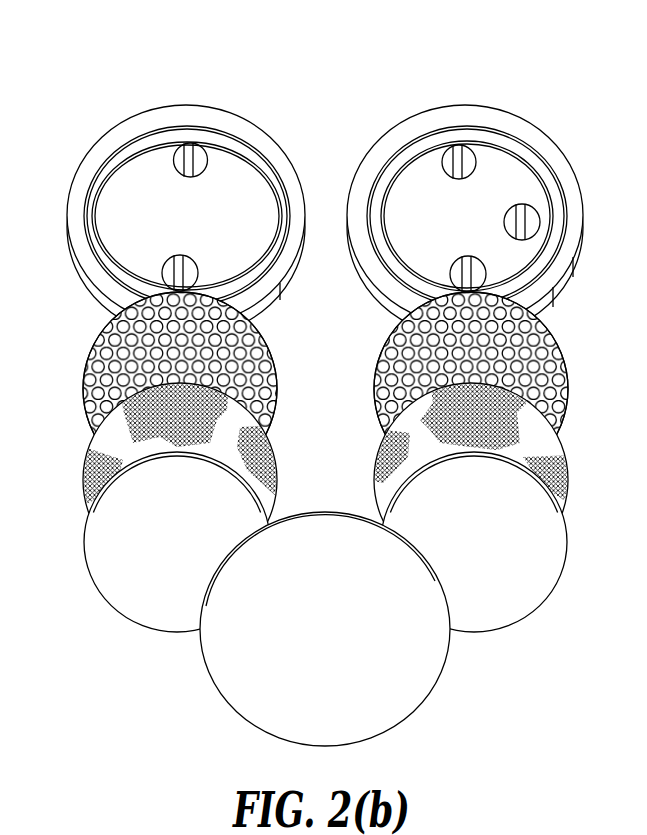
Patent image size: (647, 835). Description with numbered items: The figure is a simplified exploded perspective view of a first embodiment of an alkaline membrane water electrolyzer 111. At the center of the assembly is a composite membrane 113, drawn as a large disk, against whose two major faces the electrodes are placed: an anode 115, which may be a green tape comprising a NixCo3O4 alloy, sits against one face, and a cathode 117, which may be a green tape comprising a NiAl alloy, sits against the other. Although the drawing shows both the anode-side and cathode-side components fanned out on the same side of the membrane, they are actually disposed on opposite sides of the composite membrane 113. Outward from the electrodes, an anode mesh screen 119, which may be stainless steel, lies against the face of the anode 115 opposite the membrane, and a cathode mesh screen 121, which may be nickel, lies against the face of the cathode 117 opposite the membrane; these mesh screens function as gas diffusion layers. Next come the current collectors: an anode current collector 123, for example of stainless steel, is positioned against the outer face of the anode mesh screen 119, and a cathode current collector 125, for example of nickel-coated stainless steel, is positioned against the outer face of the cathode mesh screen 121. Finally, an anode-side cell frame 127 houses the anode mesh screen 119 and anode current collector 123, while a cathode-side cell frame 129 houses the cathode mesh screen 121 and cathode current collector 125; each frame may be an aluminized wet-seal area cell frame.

The alkaline membrane water electrolyzer 111 is at (367, 86).
The composite membrane 113 is at (236, 718).
The anode 115 is at (517, 631).
The cathode 117 is at (132, 631).
The anode mesh screen 119 is at (579, 467).
The cathode mesh screen 121 is at (72, 467).
The anode current collector 123 is at (579, 364).
The cathode current collector 125 is at (72, 364).
The anode-side cell frame 127 is at (589, 209).
The cathode-side cell frame 129 is at (62, 209).